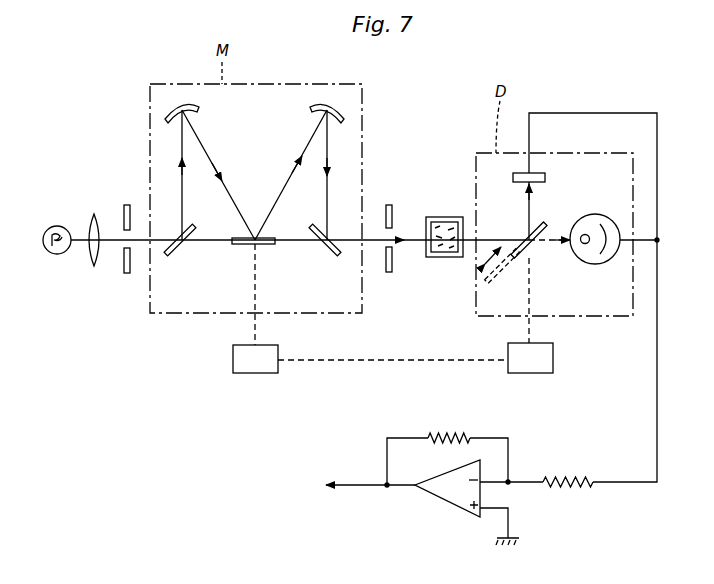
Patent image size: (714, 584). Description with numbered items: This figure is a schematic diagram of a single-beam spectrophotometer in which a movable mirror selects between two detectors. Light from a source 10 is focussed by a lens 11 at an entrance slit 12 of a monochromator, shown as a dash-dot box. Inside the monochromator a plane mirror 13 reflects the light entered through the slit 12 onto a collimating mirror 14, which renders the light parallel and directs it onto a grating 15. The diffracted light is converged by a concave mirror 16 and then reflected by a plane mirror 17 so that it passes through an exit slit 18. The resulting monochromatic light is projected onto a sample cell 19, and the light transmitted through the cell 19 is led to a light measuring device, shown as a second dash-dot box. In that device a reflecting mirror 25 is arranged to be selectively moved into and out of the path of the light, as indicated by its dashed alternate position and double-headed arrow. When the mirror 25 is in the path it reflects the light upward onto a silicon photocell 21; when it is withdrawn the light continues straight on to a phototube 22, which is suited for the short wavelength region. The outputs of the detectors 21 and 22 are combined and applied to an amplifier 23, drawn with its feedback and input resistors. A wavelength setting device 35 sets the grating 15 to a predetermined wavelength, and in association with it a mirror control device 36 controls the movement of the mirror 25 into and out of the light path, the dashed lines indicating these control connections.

The source 10 is at (56, 226).
The lens 11 is at (94, 264).
The entrance slit 12 is at (120, 230).
The plane mirror 13 is at (177, 251).
The collimating mirror 14 is at (194, 112).
The grating 15 is at (243, 248).
The concave mirror 16 is at (313, 116).
The plane mirror 17 is at (327, 256).
The exit slit 18 is at (386, 228).
The sample cell 19 is at (440, 217).
The silicon photocell 21 is at (545, 177).
The phototube 22 is at (598, 214).
The amplifier 23 is at (450, 500).
The reflecting mirror 25 is at (534, 249).
The wavelength setting device 35 is at (247, 373).
The mirror control device 36 is at (553, 355).